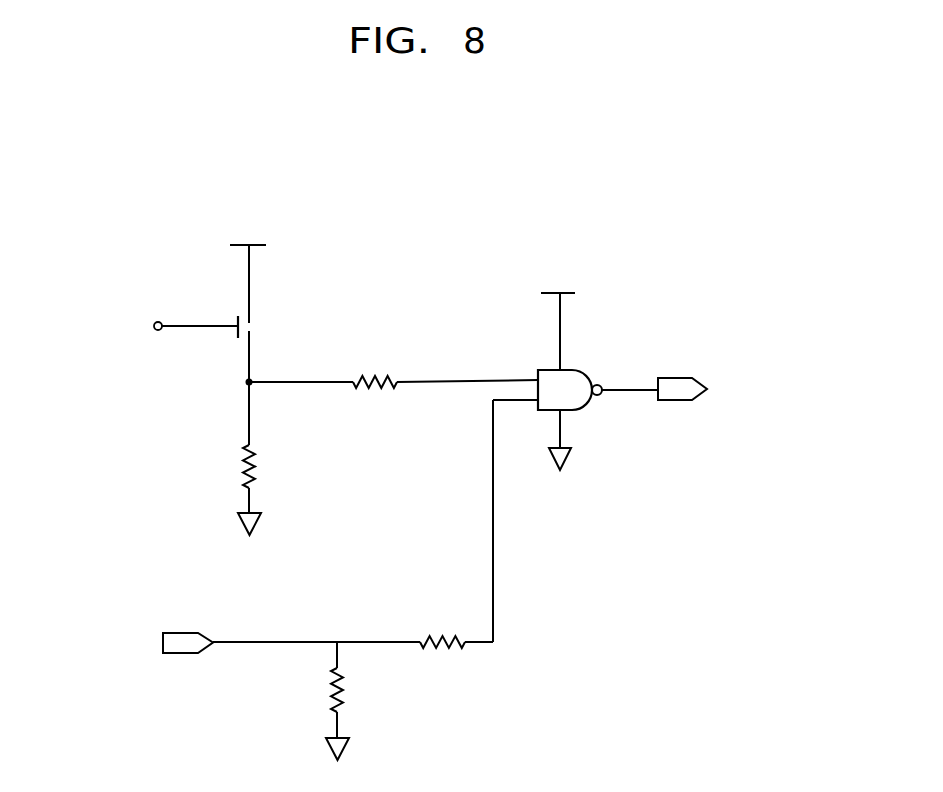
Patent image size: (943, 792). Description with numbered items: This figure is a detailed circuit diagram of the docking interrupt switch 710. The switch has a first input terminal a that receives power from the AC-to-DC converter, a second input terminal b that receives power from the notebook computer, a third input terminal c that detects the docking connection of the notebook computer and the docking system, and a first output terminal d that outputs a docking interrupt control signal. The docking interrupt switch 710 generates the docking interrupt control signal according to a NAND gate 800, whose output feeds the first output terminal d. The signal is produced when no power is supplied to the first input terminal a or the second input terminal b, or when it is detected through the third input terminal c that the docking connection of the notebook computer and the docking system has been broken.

The docking interrupt switch 710 is at (524, 236).
The NAND gate 800 is at (590, 377).
The first input terminal a is at (278, 234).
The second input terminal b is at (177, 653).
The third input terminal c is at (158, 322).
The first output terminal d is at (678, 400).